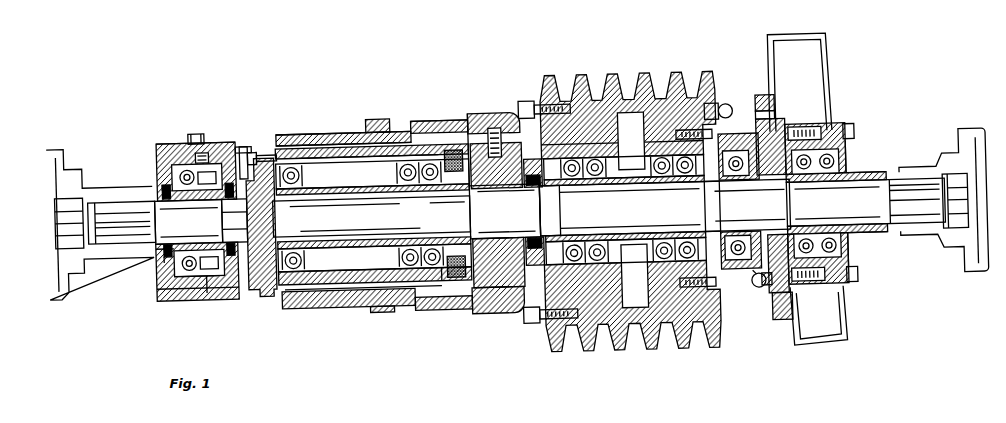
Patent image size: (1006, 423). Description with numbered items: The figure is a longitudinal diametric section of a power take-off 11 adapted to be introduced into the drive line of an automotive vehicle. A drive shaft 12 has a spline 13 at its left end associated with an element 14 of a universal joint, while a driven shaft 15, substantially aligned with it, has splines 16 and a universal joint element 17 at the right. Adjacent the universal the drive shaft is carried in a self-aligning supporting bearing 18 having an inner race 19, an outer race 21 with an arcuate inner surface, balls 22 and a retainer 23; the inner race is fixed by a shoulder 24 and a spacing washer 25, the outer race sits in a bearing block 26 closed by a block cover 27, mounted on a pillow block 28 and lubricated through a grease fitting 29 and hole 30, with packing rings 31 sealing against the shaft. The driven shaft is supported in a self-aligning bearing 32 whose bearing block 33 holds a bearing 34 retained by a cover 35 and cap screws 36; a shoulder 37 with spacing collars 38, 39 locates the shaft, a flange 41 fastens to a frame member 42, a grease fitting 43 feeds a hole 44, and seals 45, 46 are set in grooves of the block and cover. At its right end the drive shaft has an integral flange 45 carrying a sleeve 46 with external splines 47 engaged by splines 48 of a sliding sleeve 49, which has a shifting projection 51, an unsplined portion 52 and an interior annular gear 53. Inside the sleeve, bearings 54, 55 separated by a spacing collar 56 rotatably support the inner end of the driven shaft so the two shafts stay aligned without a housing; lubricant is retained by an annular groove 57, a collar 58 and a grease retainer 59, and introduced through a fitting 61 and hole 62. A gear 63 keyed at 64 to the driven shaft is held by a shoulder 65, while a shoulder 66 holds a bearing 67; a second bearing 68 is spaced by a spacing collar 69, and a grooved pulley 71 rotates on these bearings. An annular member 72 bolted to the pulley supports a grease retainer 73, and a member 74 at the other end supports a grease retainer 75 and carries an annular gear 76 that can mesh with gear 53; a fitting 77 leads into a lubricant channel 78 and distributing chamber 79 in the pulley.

The power take-off 11 is at (375, 306).
The drive shaft 12 is at (189, 221).
The spline 13 is at (103, 208).
The element of a universal joint 14 is at (52, 140).
The driven shaft 15 is at (866, 237).
The splines 16 is at (926, 241).
The universal joint element 17 is at (955, 145).
The supporting bearing 18 is at (178, 140).
The inner race 19 is at (189, 207).
The outer race 21 is at (195, 127).
The balls 22 is at (172, 264).
The cage or retainer 23 is at (188, 286).
The shoulder 24 is at (235, 227).
The spacing washer 25 is at (160, 246).
The bearing block 26 is at (163, 292).
The block cover 27 is at (245, 140).
The pillow block 28 is at (208, 292).
The grease fitting 29 is at (195, 123).
The hole 30 is at (211, 144).
The packing rings 31 is at (165, 251).
The bearing 32 is at (793, 135).
The bearing block 33 is at (780, 316).
The bearing 34 is at (835, 133).
The cover 35 is at (848, 165).
The cap screws 36 is at (852, 143).
The shoulder 37 is at (749, 204).
The spacing collar 38 is at (741, 195).
The spacing collar 39 is at (880, 183).
The flange 41 is at (766, 103).
The frame member 42 is at (800, 43).
The grease fitting 43 is at (752, 294).
The hole 44 is at (768, 296).
The integral flange 45 is at (265, 291).
The sleeve 46 is at (318, 143).
The splines 47 is at (283, 129).
The splines 48 is at (375, 143).
The sliding sleeve 49 is at (343, 129).
The projection 51 is at (390, 309).
The unsplined portion 52 is at (452, 120).
The interior annular gear 53 is at (495, 128).
The bearing 54 is at (297, 270).
The bearing 55 is at (405, 279).
The spacing collar 56 is at (372, 216).
The annular groove 57 is at (456, 290).
The collar 58 is at (373, 216).
The grease retainer 59 is at (450, 289).
The fitting 61 is at (235, 221).
The hole 62 is at (258, 146).
The gear 63 is at (470, 113).
The key 64 is at (486, 186).
The shoulder 65 is at (543, 211).
The shoulder 66 is at (566, 242).
The bearing 67 is at (625, 210).
The second bearing 68 is at (675, 208).
The spacing collar 69 is at (633, 189).
The pulley 71 is at (684, 81).
The annular member 72 is at (720, 150).
The grease retainer 73 is at (722, 193).
The member 74 is at (521, 316).
The grease retainer 75 is at (553, 243).
The annular gear 76 is at (523, 106).
The fitting 77 is at (730, 111).
The lubricant channel 78 is at (663, 140).
The distributing chamber 79 is at (626, 125).